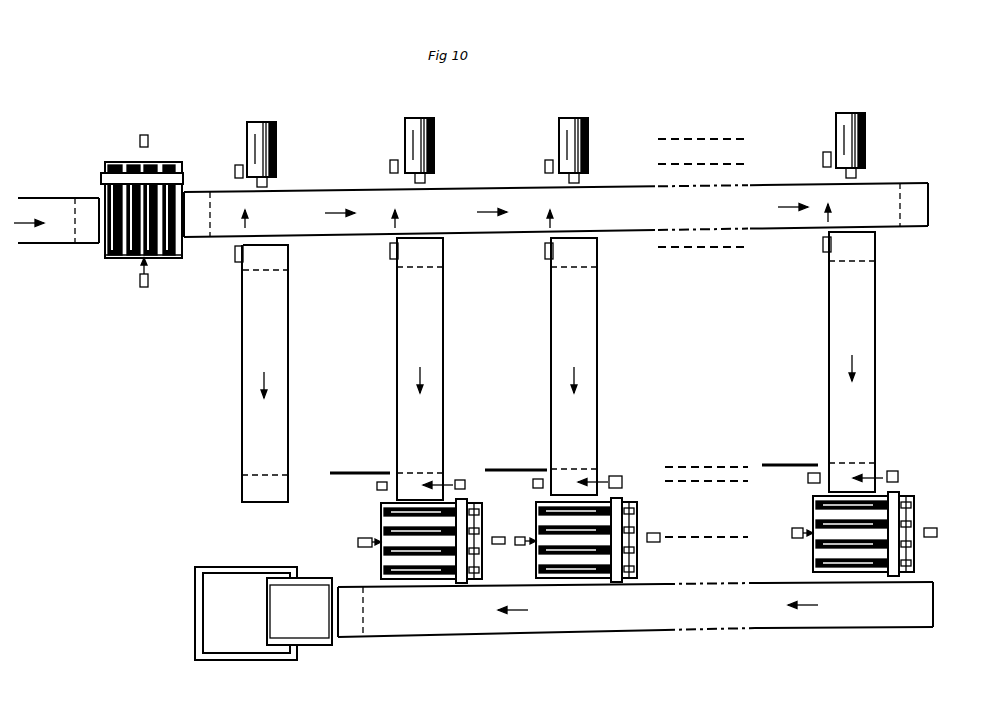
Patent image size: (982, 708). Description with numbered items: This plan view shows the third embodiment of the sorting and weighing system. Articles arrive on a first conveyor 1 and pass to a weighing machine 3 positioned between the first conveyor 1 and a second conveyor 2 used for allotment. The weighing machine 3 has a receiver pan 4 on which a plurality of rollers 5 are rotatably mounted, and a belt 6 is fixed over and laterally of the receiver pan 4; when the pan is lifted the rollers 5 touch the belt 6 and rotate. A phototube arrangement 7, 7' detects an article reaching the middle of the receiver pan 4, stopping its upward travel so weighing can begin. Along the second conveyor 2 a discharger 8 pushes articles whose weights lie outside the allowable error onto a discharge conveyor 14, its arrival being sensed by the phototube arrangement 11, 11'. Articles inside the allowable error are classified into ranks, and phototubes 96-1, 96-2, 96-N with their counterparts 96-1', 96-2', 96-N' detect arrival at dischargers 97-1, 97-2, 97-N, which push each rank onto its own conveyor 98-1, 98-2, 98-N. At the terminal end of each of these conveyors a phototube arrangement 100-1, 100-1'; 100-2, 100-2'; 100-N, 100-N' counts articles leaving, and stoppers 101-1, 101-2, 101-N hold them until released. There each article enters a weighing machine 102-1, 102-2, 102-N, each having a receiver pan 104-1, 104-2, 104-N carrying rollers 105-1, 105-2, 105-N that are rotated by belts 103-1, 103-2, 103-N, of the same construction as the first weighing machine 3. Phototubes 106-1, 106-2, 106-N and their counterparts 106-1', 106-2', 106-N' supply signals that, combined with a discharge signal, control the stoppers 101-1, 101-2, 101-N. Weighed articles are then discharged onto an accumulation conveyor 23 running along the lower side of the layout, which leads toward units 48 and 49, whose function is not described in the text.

The first conveyor 1 is at (38, 200).
The second conveyor 2 is at (320, 191).
The weighing machine 3 is at (103, 258).
The receiver pan 4 is at (118, 258).
The rollers 5 is at (140, 162).
The belt 6 is at (183, 175).
The phototube arrangement 7 is at (147, 127).
The phototube arrangement 7' is at (141, 285).
The discharger 8 is at (277, 137).
The phototube arrangement 11 is at (227, 162).
The phototube arrangement 11' is at (224, 264).
The discharge conveyor 14 is at (241, 386).
The accumulation conveyor 23 is at (503, 638).
The stacking unit 48 is at (325, 646).
The receiving box 49 is at (194, 612).
The phototube 96-1 is at (374, 156).
The phototube 96-2 is at (531, 156).
The phototube 96-N is at (804, 152).
The phototube 96-1' is at (369, 258).
The phototube 96-2' is at (528, 258).
The phototube 96-N' is at (807, 255).
The discharger 97-1 is at (435, 129).
The discharger 97-2 is at (588, 126).
The discharger 97-N is at (865, 126).
The first conveyor 98-1 is at (443, 370).
The second conveyor 98-2 is at (597, 370).
The nth conveyor 98-N is at (875, 355).
The phototube 100-1 is at (357, 490).
The phototube 100-2 is at (516, 488).
The phototube 100-N is at (791, 483).
The phototube 100-1' is at (468, 467).
The phototube 100-2' is at (630, 467).
The phototube 100-N' is at (909, 468).
The stopper 101-1 is at (345, 472).
The stopper 101-2 is at (522, 469).
The stopper 101-N is at (777, 464).
The weighing machine 102-1 is at (380, 553).
The weighing machine 102-2 is at (535, 566).
The weighing machine 102-N is at (945, 559).
The belt 103-1 is at (466, 585).
The belt 103-2 is at (620, 582).
The belt 103-N is at (896, 575).
The receiver pan 104-1 is at (380, 514).
The receiver pan 104-2 is at (622, 509).
The receiver pan 104-N is at (900, 493).
The rollers 105-1 is at (414, 510).
The rollers 105-2 is at (566, 510).
The rollers 105-N is at (843, 505).
The phototube 106-1 is at (506, 526).
The phototube 106-2 is at (666, 548).
The phototube 106-N is at (941, 522).
The phototube 106-1' is at (352, 536).
The phototube 106-2' is at (510, 551).
The phototube 106-N' is at (786, 526).